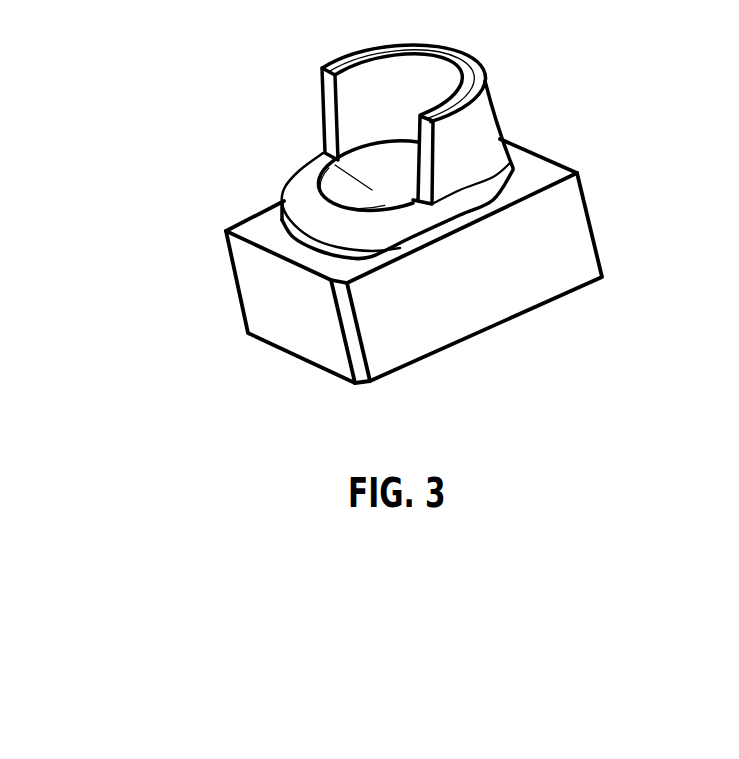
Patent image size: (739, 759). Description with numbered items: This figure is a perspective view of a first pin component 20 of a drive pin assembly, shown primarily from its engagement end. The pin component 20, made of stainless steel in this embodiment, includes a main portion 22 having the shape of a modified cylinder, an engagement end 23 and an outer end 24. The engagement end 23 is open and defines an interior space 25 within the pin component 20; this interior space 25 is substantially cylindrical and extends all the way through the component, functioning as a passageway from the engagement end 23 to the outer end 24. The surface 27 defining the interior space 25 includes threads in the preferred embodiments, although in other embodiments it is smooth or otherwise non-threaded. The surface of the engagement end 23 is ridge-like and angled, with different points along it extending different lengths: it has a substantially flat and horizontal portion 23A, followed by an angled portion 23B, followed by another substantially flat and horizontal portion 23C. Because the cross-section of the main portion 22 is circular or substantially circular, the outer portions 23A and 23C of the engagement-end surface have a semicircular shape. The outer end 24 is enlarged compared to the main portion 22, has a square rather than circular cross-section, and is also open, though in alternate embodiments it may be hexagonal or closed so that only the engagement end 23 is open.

The first pin component 20 is at (112, 101).
The main portion 22 is at (482, 110).
The engagement end 23 is at (370, 50).
The substantially flat and horizontal portion 23A is at (312, 212).
The angled portion 23B is at (382, 140).
The substantially flat and horizontal portion 23C is at (458, 55).
The outer end 24 is at (482, 337).
The interior space 25 is at (322, 159).
The surface 27 is at (397, 183).